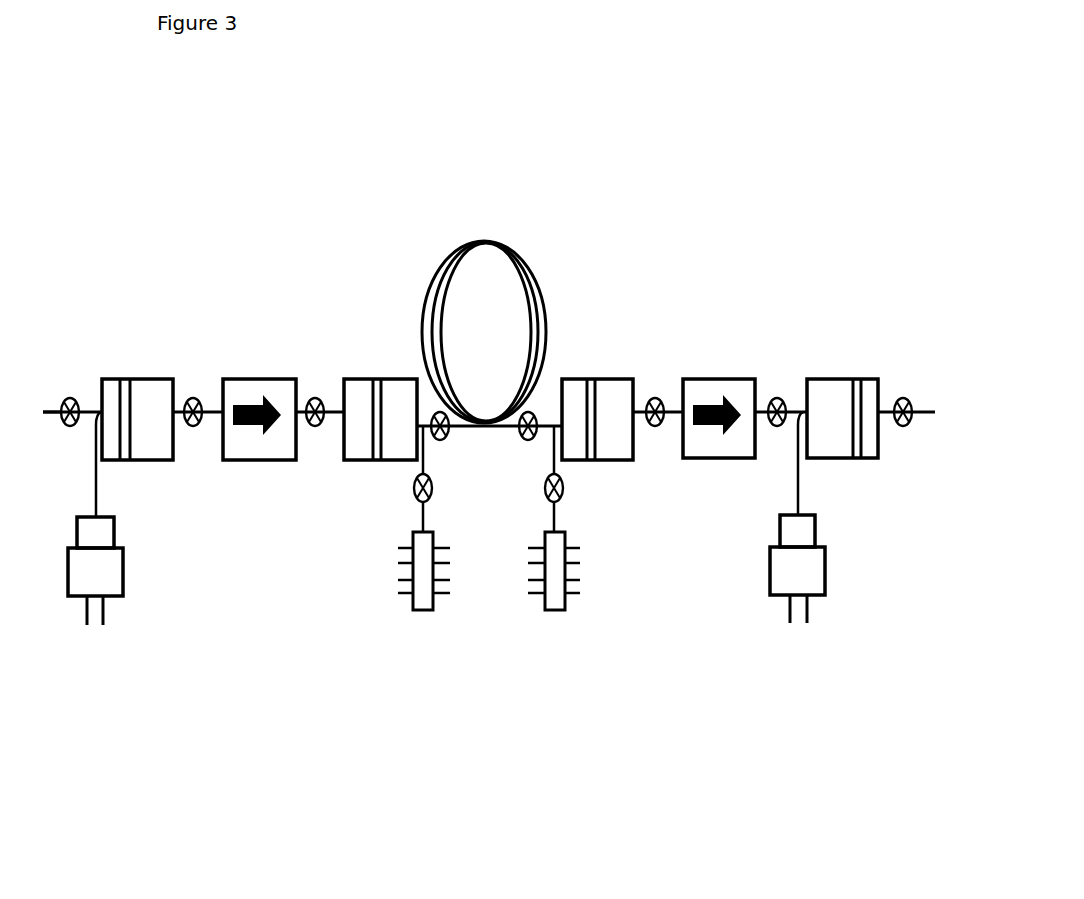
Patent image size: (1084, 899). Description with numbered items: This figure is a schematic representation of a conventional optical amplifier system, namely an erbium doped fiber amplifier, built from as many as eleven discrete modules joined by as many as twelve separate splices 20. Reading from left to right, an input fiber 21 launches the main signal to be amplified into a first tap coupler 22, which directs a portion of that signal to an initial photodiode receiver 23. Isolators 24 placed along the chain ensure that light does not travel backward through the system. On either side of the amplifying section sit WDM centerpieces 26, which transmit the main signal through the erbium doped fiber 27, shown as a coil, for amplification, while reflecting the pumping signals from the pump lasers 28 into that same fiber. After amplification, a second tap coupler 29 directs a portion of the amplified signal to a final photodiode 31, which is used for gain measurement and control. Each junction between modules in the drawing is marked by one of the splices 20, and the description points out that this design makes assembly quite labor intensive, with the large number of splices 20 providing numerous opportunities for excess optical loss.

The splices 20 is at (912, 533).
The input fiber 21 is at (45, 405).
The first tap coupler 22 is at (155, 380).
The initial photodiode receiver 23 is at (112, 597).
The isolators 24 is at (727, 380).
The WDM centerpieces 26 is at (607, 380).
The erbium doped fiber 27 is at (508, 240).
The pump lasers 28 is at (425, 613).
The second tap coupler 29 is at (842, 380).
The final photodiode 31 is at (823, 595).